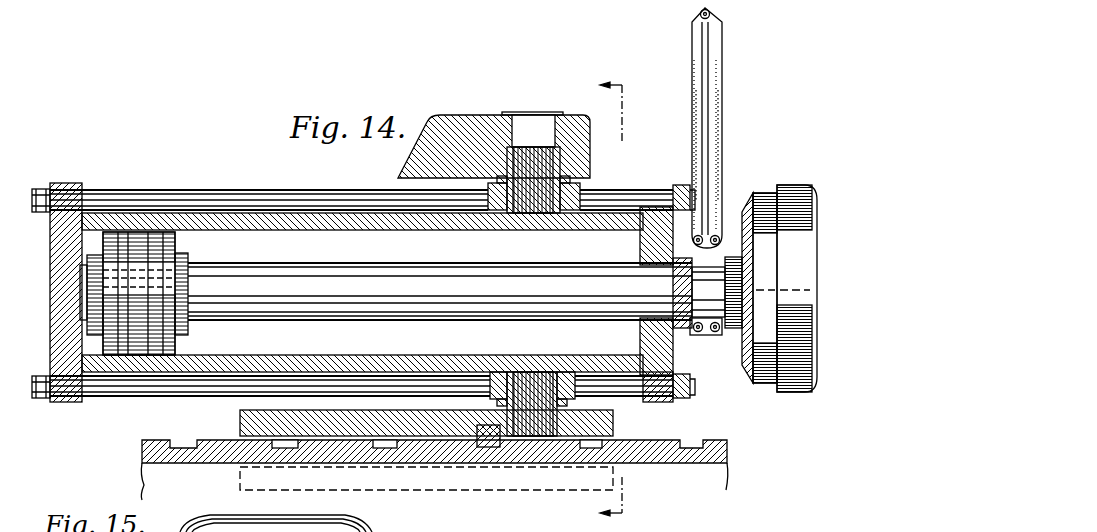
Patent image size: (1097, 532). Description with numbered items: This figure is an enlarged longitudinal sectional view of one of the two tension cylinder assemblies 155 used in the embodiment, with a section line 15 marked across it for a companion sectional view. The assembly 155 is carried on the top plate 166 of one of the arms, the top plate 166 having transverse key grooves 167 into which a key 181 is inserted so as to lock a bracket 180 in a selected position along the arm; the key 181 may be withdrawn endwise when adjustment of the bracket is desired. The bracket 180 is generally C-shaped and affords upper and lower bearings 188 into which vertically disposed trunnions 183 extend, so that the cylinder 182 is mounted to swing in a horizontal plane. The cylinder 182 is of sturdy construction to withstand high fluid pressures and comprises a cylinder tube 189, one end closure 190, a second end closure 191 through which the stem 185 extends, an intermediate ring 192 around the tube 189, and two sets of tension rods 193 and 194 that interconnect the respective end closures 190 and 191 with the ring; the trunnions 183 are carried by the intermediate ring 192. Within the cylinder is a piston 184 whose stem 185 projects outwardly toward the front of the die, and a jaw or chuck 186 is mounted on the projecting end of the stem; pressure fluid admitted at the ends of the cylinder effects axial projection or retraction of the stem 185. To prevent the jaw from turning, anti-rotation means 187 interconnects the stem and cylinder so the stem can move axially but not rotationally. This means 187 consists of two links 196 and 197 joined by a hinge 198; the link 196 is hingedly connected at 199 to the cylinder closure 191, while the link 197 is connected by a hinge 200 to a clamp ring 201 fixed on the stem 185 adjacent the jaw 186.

The section line 15 is at (621, 300).
The tension cylinder assembly 155 is at (325, 187).
The top plate 166 is at (673, 465).
The key groove 167 is at (385, 448).
The bracket 180 is at (452, 122).
The key 181 is at (480, 446).
The cylinder 182 is at (200, 398).
The trunnion 183 is at (530, 150).
The piston 184 is at (185, 240).
The stem 185 is at (468, 262).
The jaw or chuck 186 is at (800, 390).
The anti-rotation means 187 is at (724, 74).
The bearing 188 is at (575, 146).
The cylinder tube 189 is at (250, 212).
The end closure 190 is at (68, 403).
The second end closure 191 is at (655, 406).
The intermediate ring 192 is at (508, 370).
The tension rods 193 is at (185, 186).
The tension rods 194 is at (625, 191).
The link 196 is at (692, 122).
The link 197 is at (718, 129).
The hinge 198 is at (700, 13).
The hinge connection 199 is at (640, 240).
The hinge 200 is at (718, 236).
The clamp ring 201 is at (705, 336).